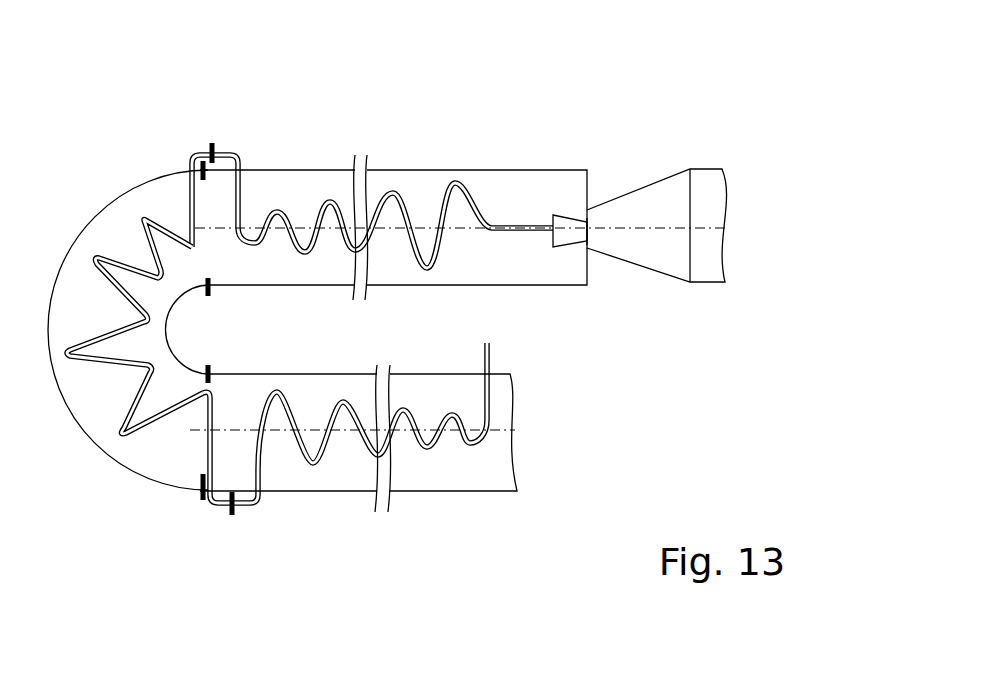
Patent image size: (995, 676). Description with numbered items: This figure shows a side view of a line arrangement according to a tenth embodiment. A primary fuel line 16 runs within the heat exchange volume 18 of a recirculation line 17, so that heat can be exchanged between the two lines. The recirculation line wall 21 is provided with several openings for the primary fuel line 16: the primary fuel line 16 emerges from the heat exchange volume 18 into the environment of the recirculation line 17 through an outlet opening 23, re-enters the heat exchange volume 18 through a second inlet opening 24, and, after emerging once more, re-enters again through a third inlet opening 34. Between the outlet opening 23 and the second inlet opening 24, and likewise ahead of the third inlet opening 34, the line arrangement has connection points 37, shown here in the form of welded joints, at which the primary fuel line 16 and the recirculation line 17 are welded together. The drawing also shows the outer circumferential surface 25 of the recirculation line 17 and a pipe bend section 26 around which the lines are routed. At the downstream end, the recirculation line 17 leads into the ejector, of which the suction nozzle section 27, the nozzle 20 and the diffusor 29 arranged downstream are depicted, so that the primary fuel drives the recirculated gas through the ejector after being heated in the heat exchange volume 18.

The primary fuel line 16 is at (404, 184).
The recirculation line 17 is at (544, 161).
The heat exchange volume 18 is at (99, 421).
The nozzle 20 is at (567, 254).
The recirculation line wall 21 is at (427, 493).
The outlet opening 23 is at (265, 503).
The second inlet opening 24 is at (207, 504).
The outer circumferential surface 25 is at (343, 493).
The pipe bend section 26 is at (70, 207).
The suction nozzle section 27 is at (591, 244).
The diffusor 29 is at (650, 169).
The third inlet opening 34 is at (243, 160).
The connection point 37 is at (213, 134).